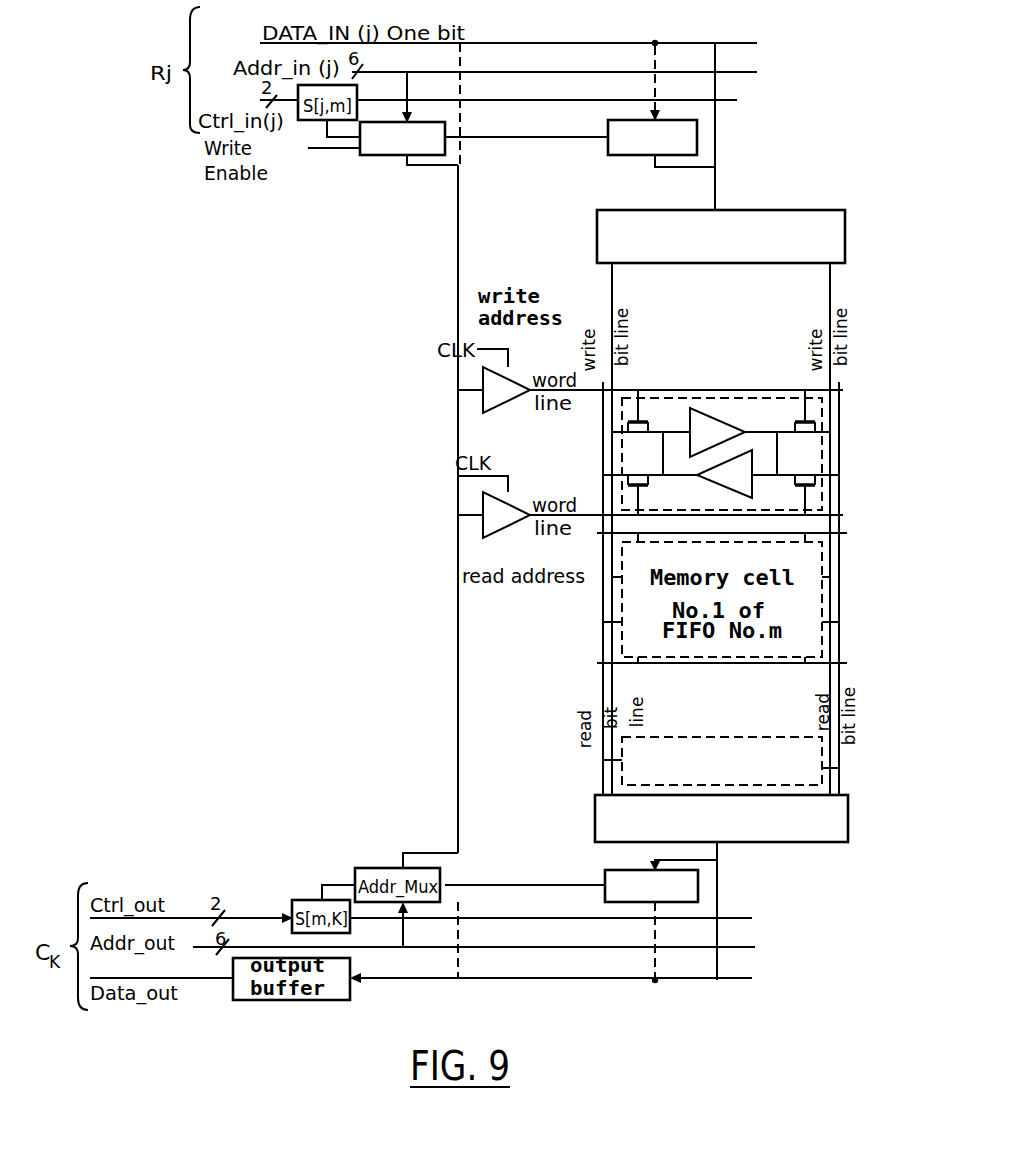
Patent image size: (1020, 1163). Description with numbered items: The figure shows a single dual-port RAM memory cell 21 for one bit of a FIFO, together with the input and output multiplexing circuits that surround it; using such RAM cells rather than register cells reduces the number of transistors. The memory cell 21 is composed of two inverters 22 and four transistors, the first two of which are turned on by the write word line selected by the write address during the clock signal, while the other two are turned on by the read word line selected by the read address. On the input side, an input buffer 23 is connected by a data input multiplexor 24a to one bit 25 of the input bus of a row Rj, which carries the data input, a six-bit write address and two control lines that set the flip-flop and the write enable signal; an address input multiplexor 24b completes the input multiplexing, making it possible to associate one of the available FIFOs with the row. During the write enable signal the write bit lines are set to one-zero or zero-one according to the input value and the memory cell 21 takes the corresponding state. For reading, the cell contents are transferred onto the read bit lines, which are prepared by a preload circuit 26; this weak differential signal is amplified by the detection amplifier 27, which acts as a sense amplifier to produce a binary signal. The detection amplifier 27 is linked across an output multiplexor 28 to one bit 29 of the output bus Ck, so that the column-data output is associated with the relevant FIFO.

The memory cell 21 is at (838, 201).
The inverters 22 is at (708, 432).
The input buffer 23 is at (597, 227).
The data input multiplexor 24a is at (697, 152).
The address input multiplexor 24b is at (366, 157).
The one bit of input bus 25 is at (523, 43).
The preload circuit 26 is at (813, 770).
The detection amplifier 27 is at (827, 828).
The output multiplexor 28 is at (698, 892).
The one bit of output bus 29 is at (557, 982).